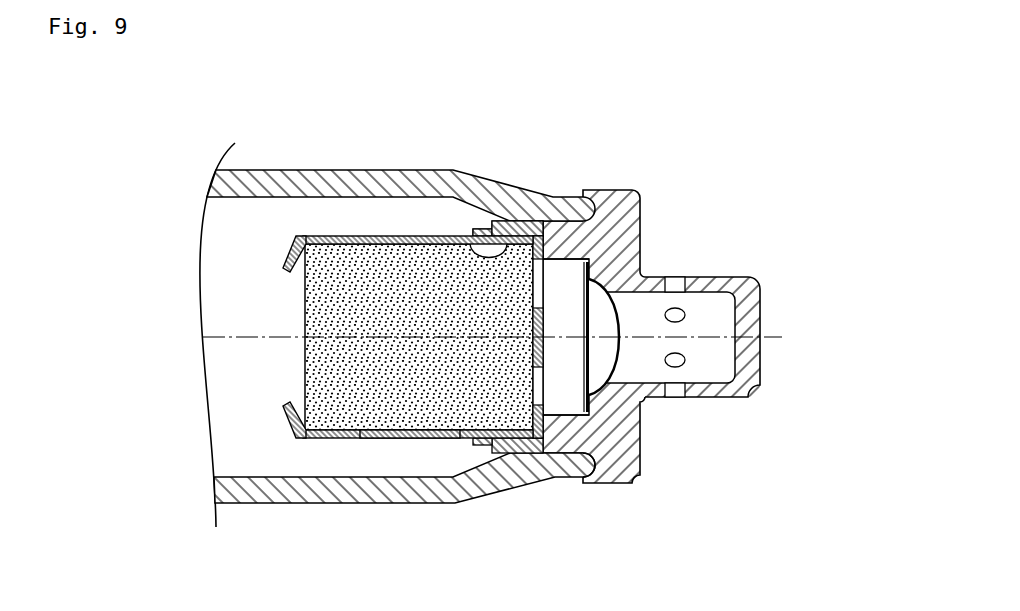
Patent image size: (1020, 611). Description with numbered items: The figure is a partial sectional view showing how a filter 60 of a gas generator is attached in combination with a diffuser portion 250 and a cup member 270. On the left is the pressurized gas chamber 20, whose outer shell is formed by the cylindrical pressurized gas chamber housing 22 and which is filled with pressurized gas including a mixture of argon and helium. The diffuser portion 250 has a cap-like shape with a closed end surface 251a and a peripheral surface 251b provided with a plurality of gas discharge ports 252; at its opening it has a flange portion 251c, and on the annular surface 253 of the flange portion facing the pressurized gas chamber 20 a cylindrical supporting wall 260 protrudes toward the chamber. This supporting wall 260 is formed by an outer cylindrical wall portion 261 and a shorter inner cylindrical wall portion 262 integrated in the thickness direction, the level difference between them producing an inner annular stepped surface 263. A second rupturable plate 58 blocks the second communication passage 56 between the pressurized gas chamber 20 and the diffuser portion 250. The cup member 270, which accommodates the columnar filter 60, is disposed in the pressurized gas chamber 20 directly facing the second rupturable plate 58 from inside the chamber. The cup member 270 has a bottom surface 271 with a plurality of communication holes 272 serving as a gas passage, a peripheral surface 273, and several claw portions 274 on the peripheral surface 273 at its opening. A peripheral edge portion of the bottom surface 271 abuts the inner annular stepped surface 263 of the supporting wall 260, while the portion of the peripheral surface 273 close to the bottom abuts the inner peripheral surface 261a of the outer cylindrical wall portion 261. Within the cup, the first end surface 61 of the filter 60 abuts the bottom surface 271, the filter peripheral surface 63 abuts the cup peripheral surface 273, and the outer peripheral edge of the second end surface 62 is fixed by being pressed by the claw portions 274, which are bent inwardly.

The pressurized gas chamber 20 is at (239, 299).
The pressurized gas chamber housing 22 is at (338, 171).
The second communication passage 56 is at (721, 350).
The second rupturable plate 58 is at (621, 345).
The filter 60 is at (296, 383).
The first end surface 61 is at (608, 293).
The second end surface 62 is at (302, 343).
The filter peripheral surface 63 is at (445, 440).
The diffuser portion 250 is at (663, 216).
The closed end surface 251a is at (735, 305).
The peripheral surface 251b is at (725, 398).
The flange portion 251c is at (612, 190).
The gas discharge ports 252 is at (676, 398).
The annular surface 253 is at (572, 478).
The cylindrical supporting wall 260 is at (575, 120).
The outer cylindrical wall portion 261 is at (490, 228).
The inner peripheral surface 261a is at (468, 237).
The inner cylindrical wall portion 262 is at (552, 222).
The inner annular stepped surface 263 is at (508, 454).
The cup member 270 is at (336, 458).
The bottom surface 271 is at (584, 476).
The communication holes 272 is at (563, 416).
The peripheral surface 273 is at (382, 440).
The claw portions 274 is at (296, 239).